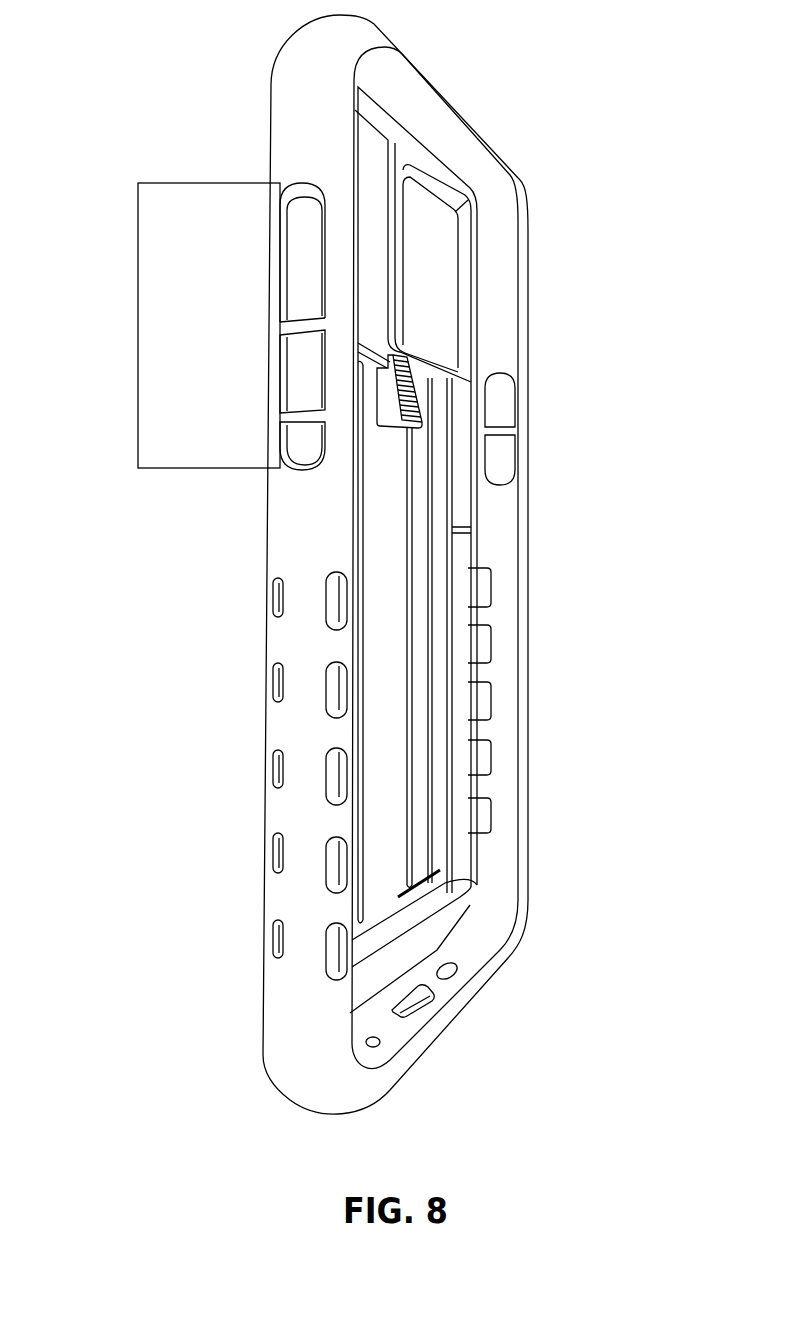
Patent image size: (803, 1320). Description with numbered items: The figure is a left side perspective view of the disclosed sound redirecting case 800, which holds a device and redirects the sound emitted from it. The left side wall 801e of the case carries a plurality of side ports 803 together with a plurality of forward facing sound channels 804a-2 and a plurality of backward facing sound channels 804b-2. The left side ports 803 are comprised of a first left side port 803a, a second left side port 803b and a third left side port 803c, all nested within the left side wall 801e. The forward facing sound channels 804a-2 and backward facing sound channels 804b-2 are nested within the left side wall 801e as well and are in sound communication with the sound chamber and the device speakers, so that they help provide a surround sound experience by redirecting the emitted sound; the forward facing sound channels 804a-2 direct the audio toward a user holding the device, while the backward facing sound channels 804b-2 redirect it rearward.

The sound redirecting case 800 is at (546, 264).
The left side wall 801e is at (298, 508).
The side ports 803 is at (191, 326).
The first left side port 803a is at (285, 252).
The second left side port 803b is at (285, 372).
The third left side port 803c is at (285, 443).
The forward facing sound channels 804a-2 is at (338, 607).
The backward facing sound channels 804b-2 is at (278, 597).